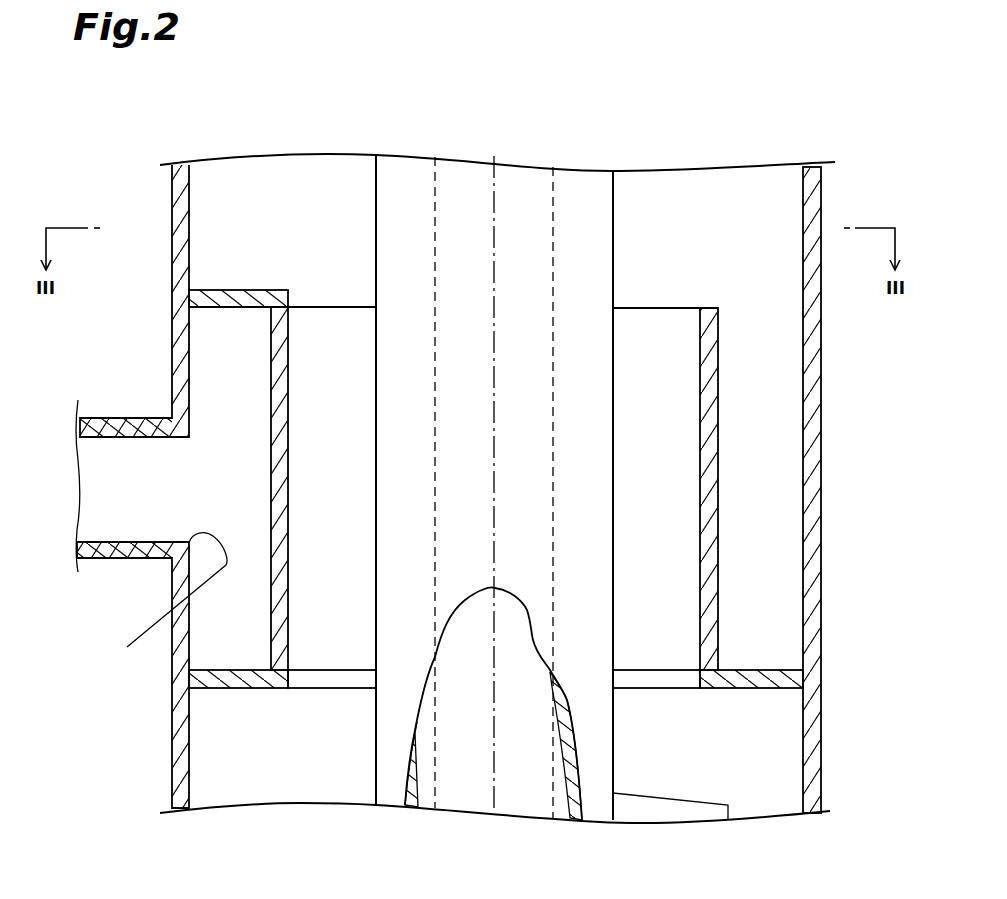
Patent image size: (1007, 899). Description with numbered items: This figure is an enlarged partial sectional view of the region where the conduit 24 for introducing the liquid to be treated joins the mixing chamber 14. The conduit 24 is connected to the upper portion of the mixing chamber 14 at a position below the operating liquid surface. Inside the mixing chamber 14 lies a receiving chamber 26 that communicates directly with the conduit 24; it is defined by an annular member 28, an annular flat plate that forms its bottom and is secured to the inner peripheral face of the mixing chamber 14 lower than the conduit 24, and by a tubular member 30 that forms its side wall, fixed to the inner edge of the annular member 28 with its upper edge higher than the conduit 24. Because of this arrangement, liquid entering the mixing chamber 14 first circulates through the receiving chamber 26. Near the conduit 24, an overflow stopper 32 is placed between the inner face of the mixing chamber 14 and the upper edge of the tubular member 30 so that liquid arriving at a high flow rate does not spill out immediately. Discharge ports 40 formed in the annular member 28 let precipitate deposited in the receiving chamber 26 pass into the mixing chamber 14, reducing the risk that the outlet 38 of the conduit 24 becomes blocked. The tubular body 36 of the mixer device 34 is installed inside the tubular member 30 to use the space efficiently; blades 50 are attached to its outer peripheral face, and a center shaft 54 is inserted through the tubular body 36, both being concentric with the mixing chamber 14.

The mixing chamber 14 is at (175, 258).
The conduit 24 is at (114, 558).
The receiving chamber 26 is at (777, 297).
The annular member 28 is at (237, 688).
The tubular member 30 is at (289, 430).
The overflow stopper 32 is at (256, 297).
The mixer device 34 is at (622, 195).
The tubular body 36 is at (601, 236).
The outlet 38 is at (162, 601).
The discharge ports 40 is at (345, 672).
The blades 50 is at (663, 802).
The center shaft 54 is at (513, 806).